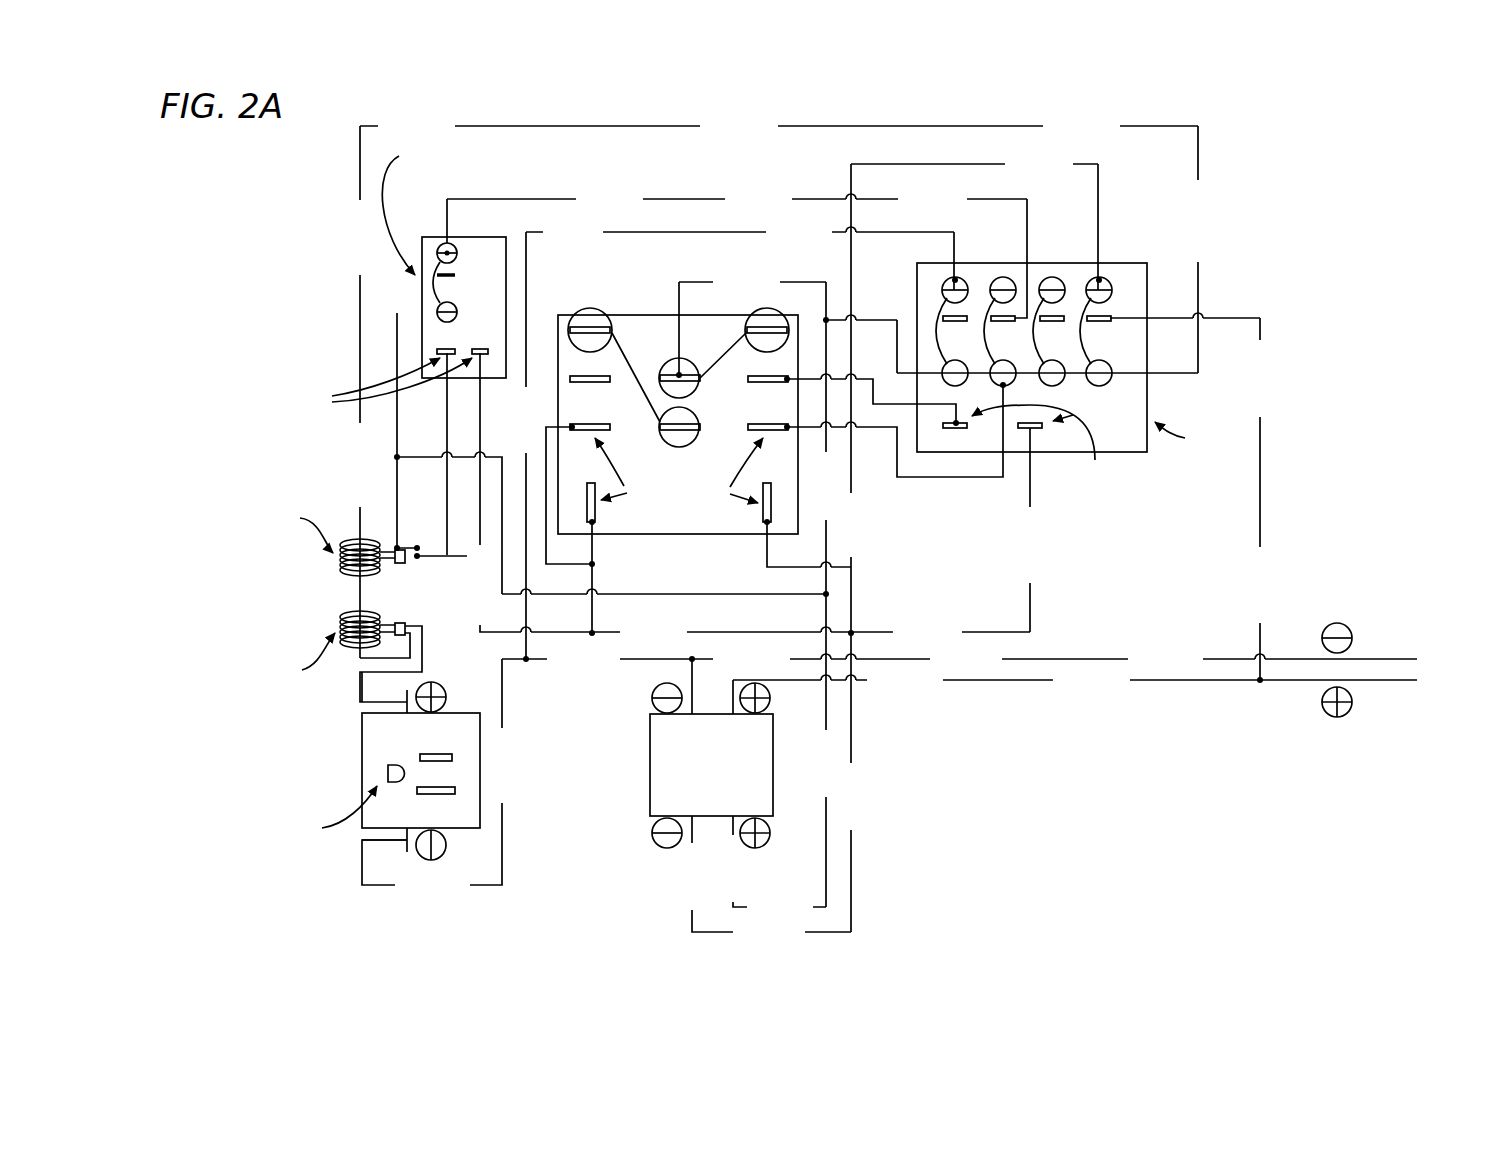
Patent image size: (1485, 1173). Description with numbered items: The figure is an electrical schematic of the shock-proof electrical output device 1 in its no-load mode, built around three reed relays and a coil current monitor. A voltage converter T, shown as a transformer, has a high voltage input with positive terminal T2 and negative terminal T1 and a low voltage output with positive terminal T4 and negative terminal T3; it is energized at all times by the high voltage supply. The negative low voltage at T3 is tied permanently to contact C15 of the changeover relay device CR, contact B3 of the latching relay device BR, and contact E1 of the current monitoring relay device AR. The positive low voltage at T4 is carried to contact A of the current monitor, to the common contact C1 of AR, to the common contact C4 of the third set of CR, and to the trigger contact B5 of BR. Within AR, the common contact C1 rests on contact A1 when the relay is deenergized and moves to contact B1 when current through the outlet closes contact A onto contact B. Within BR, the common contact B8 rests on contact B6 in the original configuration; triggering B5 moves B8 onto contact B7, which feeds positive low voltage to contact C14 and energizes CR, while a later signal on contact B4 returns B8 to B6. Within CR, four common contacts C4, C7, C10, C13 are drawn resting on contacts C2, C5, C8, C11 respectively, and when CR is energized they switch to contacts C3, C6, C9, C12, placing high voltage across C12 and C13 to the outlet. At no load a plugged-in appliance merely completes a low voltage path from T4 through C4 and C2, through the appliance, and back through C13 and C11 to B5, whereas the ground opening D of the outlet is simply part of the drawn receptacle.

The shock-proof electrical output device 1 is at (1275, 152).
The current monitoring relay device AR is at (288, 302).
The latching relay device BR is at (658, 312).
The changeover relay device CR is at (1113, 256).
The voltage converter T is at (647, 766).
The contact A is at (417, 536).
The contact B is at (420, 570).
The outlet ground slot D is at (396, 773).
The contact A1 is at (463, 253).
The contact B1 is at (464, 278).
The common contact C1 is at (463, 312).
The contact E1 is at (491, 365).
The contact B3 is at (607, 509).
The contact B4 is at (755, 429).
The trigger button B5 is at (754, 509).
The contact B6 is at (753, 330).
The contact B7 is at (755, 380).
The contact B8 is at (673, 367).
The contact C2 is at (944, 283).
The contact C3 is at (957, 331).
The common contact C4 is at (967, 382).
The contact C5 is at (992, 283).
The contact C6 is at (1005, 331).
The common contact C7 is at (1014, 382).
The contact C8 is at (1064, 283).
The contact C9 is at (1053, 331).
The common contact C10 is at (1067, 382).
The contact C11 is at (1117, 283).
The contact C12 is at (1106, 331).
The common contact C13 is at (1116, 382).
The contact C14 is at (973, 439).
The contact C15 is at (1046, 439).
The negative high voltage input terminal T1 is at (681, 698).
The positive high voltage input terminal T2 is at (742, 698).
The negative low voltage output terminal T3 is at (681, 833).
The positive low voltage output terminal T4 is at (742, 833).